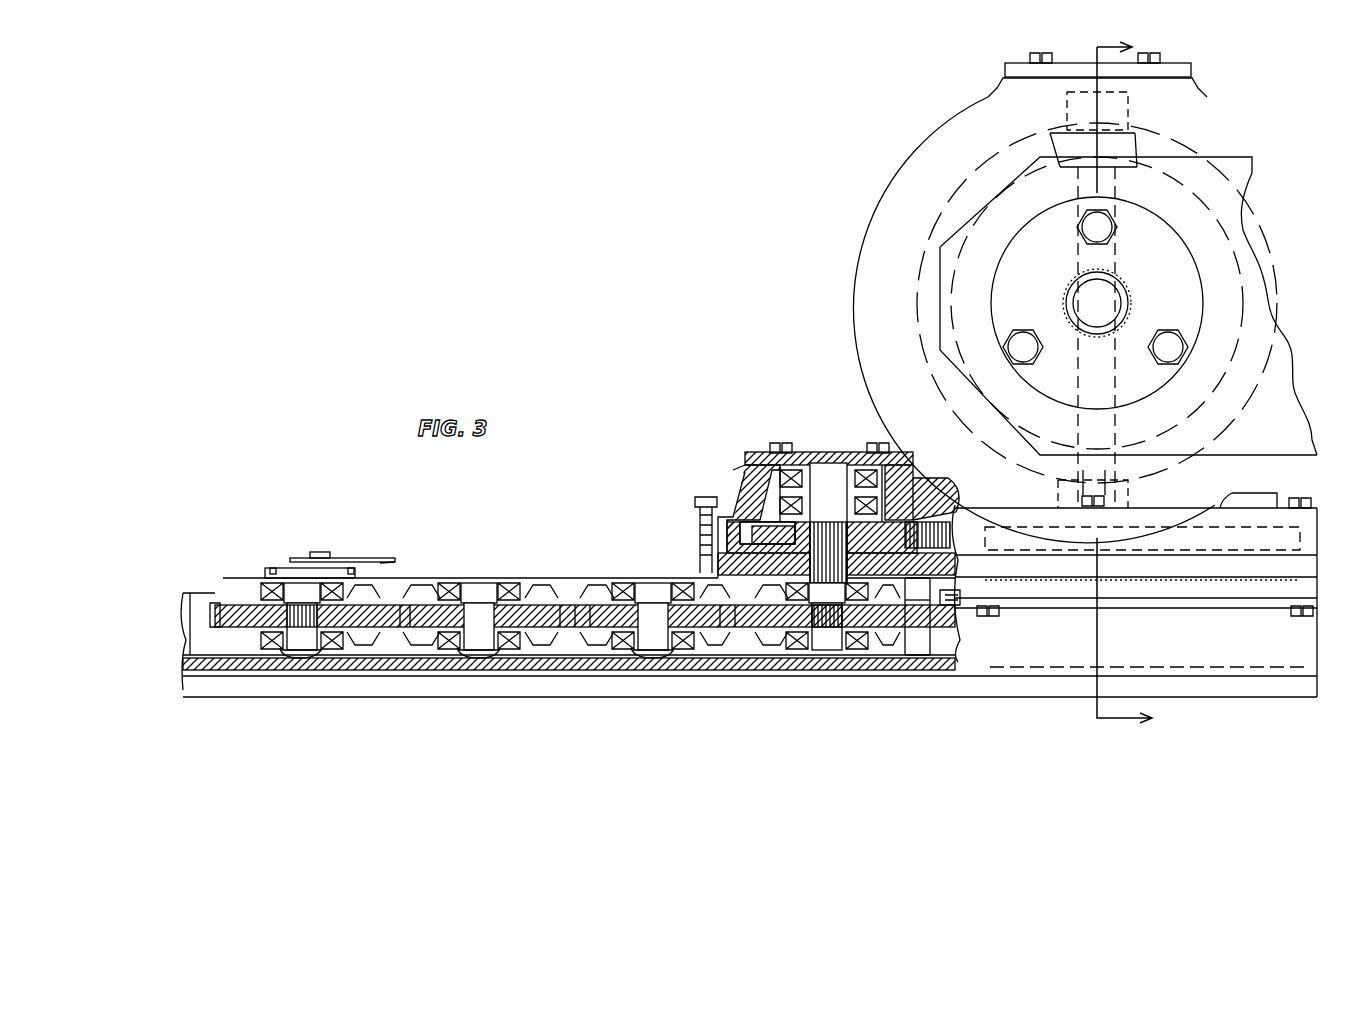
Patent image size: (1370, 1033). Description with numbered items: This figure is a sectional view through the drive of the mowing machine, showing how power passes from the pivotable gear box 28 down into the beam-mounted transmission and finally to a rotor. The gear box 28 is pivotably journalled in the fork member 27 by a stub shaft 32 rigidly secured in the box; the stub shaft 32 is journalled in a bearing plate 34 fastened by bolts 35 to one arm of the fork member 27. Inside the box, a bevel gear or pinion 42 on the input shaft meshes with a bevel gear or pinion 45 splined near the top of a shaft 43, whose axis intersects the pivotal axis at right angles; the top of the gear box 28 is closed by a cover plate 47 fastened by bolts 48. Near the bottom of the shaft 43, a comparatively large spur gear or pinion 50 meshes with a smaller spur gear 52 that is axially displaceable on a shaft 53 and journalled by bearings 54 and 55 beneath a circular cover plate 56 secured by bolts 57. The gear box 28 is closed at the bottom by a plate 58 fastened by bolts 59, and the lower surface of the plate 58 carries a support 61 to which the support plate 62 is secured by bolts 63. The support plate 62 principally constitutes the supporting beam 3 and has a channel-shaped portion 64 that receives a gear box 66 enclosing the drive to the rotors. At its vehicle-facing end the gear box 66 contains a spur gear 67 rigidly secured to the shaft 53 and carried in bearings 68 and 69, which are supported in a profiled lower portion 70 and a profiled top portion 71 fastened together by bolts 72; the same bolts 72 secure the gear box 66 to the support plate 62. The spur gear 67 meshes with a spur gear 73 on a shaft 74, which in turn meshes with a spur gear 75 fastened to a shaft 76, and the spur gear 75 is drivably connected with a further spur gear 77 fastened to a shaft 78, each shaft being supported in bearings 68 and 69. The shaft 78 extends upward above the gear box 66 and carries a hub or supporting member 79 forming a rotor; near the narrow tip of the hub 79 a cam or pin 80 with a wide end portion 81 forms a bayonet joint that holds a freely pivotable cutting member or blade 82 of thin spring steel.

The supporting beam 3 is at (580, 572).
The fork member 27 is at (1252, 302).
The gear box 28 is at (850, 305).
The stub shaft 32 is at (1070, 290).
The bearing plate 34 is at (1168, 372).
The bolts 35 is at (1178, 312).
The bevel gear or pinion 42 is at (925, 252).
The shaft 43 is at (1110, 275).
The bevel gear or pinion 45 is at (1125, 150).
The cover plate 47 is at (1185, 75).
The bolts 48 is at (1030, 58).
The spur gear or pinion 50 is at (1192, 522).
The spur gear 52 is at (745, 535).
The shaft 53 is at (828, 520).
The bearing 54 is at (925, 500).
The bearing 55 is at (895, 490).
The cover plate 56 is at (735, 455).
The bolts 57 is at (782, 446).
The plate 58 is at (1300, 572).
The bolts 59 is at (1300, 497).
The support 61 is at (1205, 600).
The support plate 62 is at (1320, 660).
The bolts 63 is at (992, 616).
The channel-shaped portion 64 is at (1072, 695).
The gear box 66 is at (945, 653).
The spur gear 67 is at (912, 630).
The bearing 68 is at (272, 645).
The bearing 69 is at (268, 583).
The lower portion 70 is at (572, 628).
The top portion 71 is at (548, 578).
The bolts 72 is at (955, 595).
The spur gear 73 is at (728, 628).
The shaft 74 is at (648, 583).
The spur gear 75 is at (528, 628).
The shaft 76 is at (480, 583).
The spur gear 77 is at (208, 598).
The shaft 78 is at (300, 660).
The hub or supporting member 79 is at (285, 568).
The cam or pin 80 is at (330, 556).
The wide end portion 81 is at (320, 552).
The cutting member or blade 82 is at (400, 548).